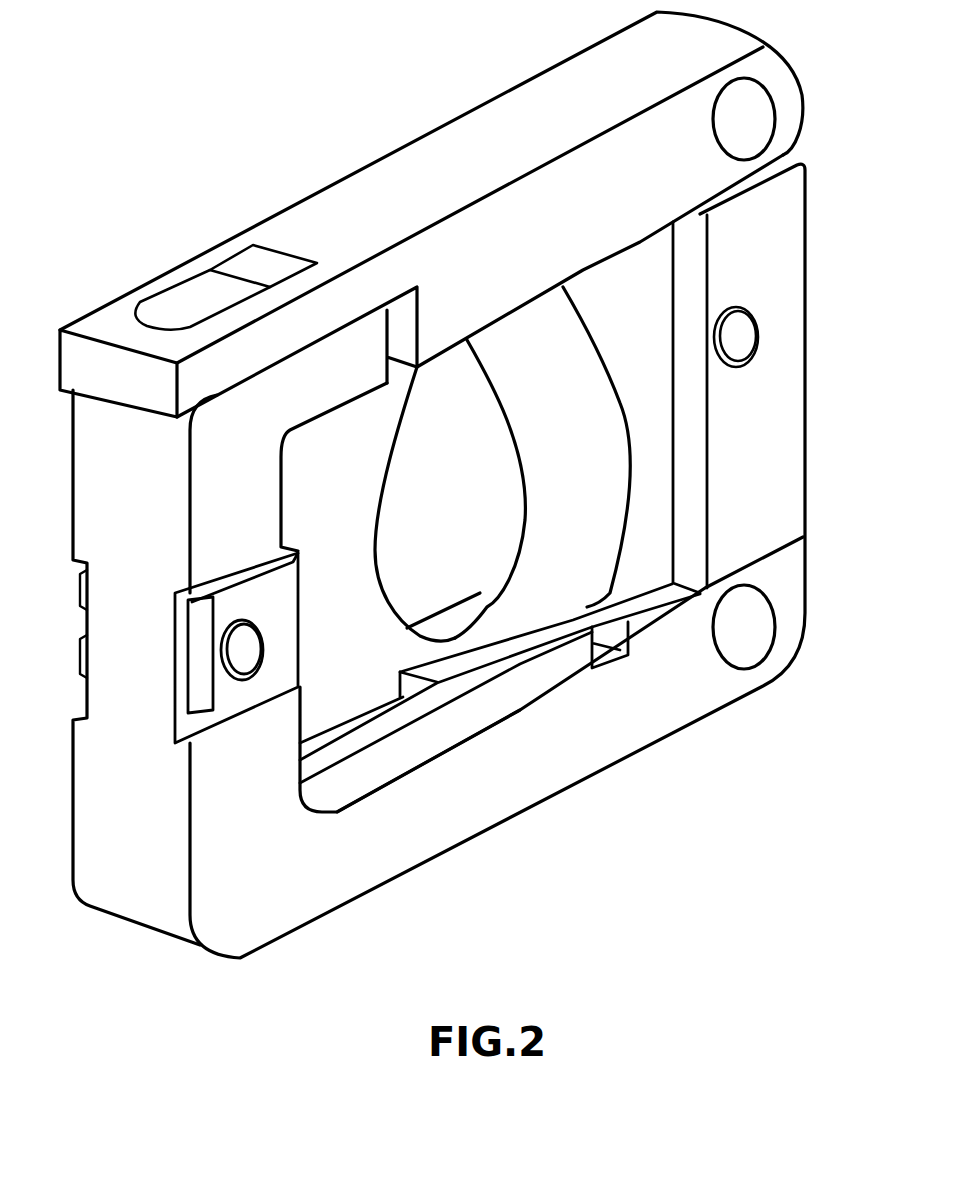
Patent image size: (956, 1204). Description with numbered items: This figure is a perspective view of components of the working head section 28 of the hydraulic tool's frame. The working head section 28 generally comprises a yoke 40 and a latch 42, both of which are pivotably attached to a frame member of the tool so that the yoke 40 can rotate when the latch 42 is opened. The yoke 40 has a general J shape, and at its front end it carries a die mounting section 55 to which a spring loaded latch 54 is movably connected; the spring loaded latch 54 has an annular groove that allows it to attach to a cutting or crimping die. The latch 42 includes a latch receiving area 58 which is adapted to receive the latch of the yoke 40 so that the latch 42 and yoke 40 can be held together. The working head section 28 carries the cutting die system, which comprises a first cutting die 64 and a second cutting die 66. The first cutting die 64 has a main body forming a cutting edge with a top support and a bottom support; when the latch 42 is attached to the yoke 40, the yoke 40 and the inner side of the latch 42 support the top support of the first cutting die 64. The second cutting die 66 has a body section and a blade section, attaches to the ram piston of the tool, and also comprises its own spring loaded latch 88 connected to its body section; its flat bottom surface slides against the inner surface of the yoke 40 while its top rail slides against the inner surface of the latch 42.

The working head section 28 is at (290, 917).
The yoke 40 is at (497, 820).
The latch 42 is at (433, 134).
The spring loaded latch 54 is at (232, 657).
The die mounting section 55 is at (96, 614).
The latch receiving area 58 is at (240, 262).
The first cutting die 64 is at (343, 703).
The second cutting die 66 is at (682, 570).
The spring loaded latch 88 is at (737, 322).